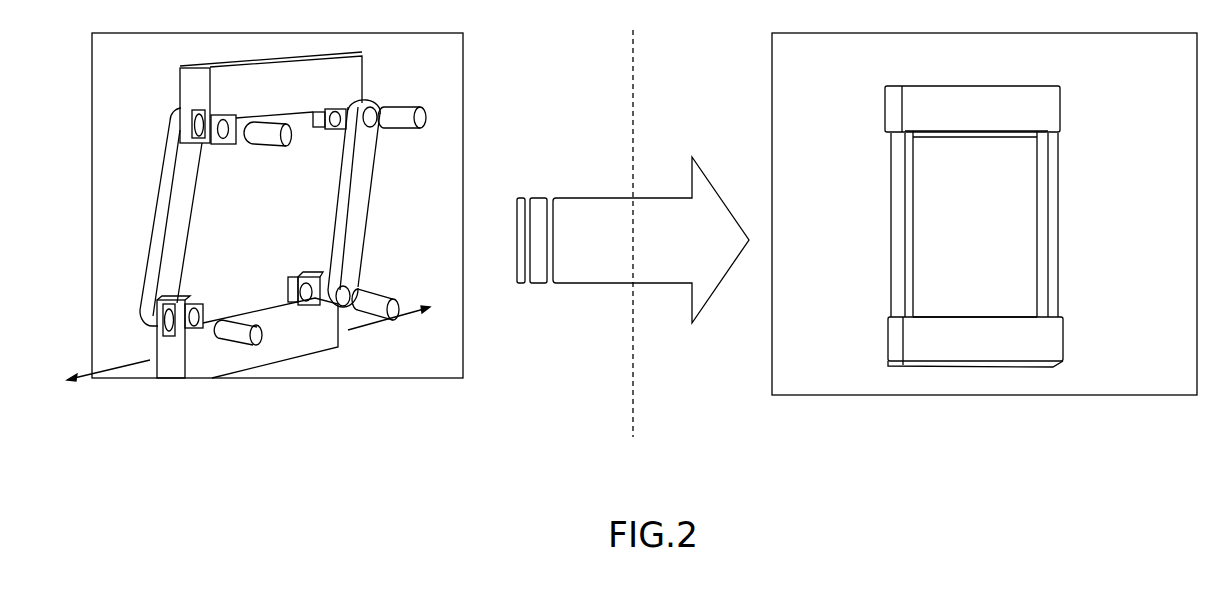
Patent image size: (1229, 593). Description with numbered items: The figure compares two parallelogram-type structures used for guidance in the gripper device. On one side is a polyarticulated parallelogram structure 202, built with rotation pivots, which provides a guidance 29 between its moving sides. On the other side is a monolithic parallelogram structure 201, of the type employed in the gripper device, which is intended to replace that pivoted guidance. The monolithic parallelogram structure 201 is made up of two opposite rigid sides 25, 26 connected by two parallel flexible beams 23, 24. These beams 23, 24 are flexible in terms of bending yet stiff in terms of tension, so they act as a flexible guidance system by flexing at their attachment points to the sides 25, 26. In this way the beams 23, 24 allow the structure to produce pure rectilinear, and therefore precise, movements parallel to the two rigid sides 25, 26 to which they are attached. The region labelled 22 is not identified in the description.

The first display region 22 is at (92, 325).
The polyarticulated parallelogram structure 202 is at (345, 360).
The guidance 29 is at (115, 380).
The monolithic parallelogram structure 201 is at (1133, 382).
The side of the parallelogram 25 is at (947, 87).
The side of the parallelogram 26 is at (967, 367).
The flexible beam 23 is at (913, 233).
The flexible beam 24 is at (1033, 260).